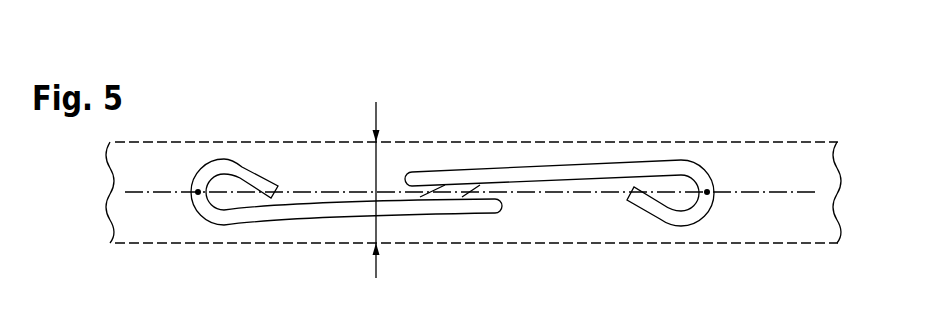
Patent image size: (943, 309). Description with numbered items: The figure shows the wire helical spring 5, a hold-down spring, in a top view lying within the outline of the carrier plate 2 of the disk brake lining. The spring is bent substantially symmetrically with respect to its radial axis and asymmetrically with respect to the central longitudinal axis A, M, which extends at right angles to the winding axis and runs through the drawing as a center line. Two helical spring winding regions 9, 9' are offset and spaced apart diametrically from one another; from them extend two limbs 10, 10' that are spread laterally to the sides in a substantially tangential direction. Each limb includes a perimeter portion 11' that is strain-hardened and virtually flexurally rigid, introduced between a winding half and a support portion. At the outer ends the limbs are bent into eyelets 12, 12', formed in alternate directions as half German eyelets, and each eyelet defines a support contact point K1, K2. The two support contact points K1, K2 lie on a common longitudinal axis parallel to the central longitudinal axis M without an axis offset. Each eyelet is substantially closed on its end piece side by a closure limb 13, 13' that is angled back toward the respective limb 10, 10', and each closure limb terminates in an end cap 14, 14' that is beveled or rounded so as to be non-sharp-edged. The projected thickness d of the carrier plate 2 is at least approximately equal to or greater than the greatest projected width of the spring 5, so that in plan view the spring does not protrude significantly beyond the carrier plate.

The carrier plate 2 is at (722, 165).
The wire helical spring 5 is at (533, 157).
The helical spring winding region 9 is at (421, 142).
The limb 10 is at (546, 142).
The eyelet 12 is at (659, 154).
The closure limb 13 is at (651, 240).
The end cap 14 is at (718, 226).
The helical spring winding region 9' is at (486, 246).
The limb 10' is at (359, 246).
The perimeter portion 11' is at (359, 253).
The eyelet 12' is at (208, 233).
The closure limb 13' is at (252, 148).
The end cap 14' is at (175, 226).
The support contact point K1 is at (198, 189).
The support contact point K2 is at (706, 189).
The axis / center line A, M is at (778, 192).
The projected thickness d is at (370, 160).